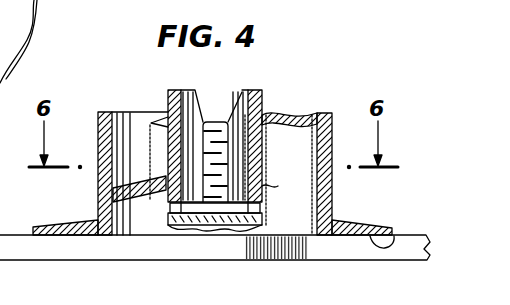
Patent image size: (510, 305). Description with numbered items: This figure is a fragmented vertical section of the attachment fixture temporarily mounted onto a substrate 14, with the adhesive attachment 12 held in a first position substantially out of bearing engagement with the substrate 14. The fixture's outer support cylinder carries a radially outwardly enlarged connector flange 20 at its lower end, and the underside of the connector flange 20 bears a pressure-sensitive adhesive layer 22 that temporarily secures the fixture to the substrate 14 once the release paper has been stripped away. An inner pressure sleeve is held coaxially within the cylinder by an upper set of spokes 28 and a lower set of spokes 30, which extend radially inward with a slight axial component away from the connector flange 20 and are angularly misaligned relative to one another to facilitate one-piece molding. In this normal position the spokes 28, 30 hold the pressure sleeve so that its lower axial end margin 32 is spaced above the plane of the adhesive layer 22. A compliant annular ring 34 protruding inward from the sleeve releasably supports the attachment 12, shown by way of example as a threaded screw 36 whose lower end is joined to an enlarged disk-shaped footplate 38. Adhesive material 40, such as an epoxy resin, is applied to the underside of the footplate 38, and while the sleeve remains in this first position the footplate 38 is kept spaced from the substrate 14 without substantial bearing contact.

The adhesive attachment 12 is at (206, 112).
The substrate 14 is at (356, 250).
The connector flange 20 is at (340, 226).
The adhesive layer 22 is at (393, 236).
The upper set of spokes 28 is at (285, 117).
The lower set of spokes 30 is at (120, 194).
The lower axial end margin 32 is at (265, 213).
The compliant annular ring 34 is at (262, 158).
The threaded screw 36 is at (236, 107).
The footplate 38 is at (170, 214).
The adhesive material 40 is at (230, 214).